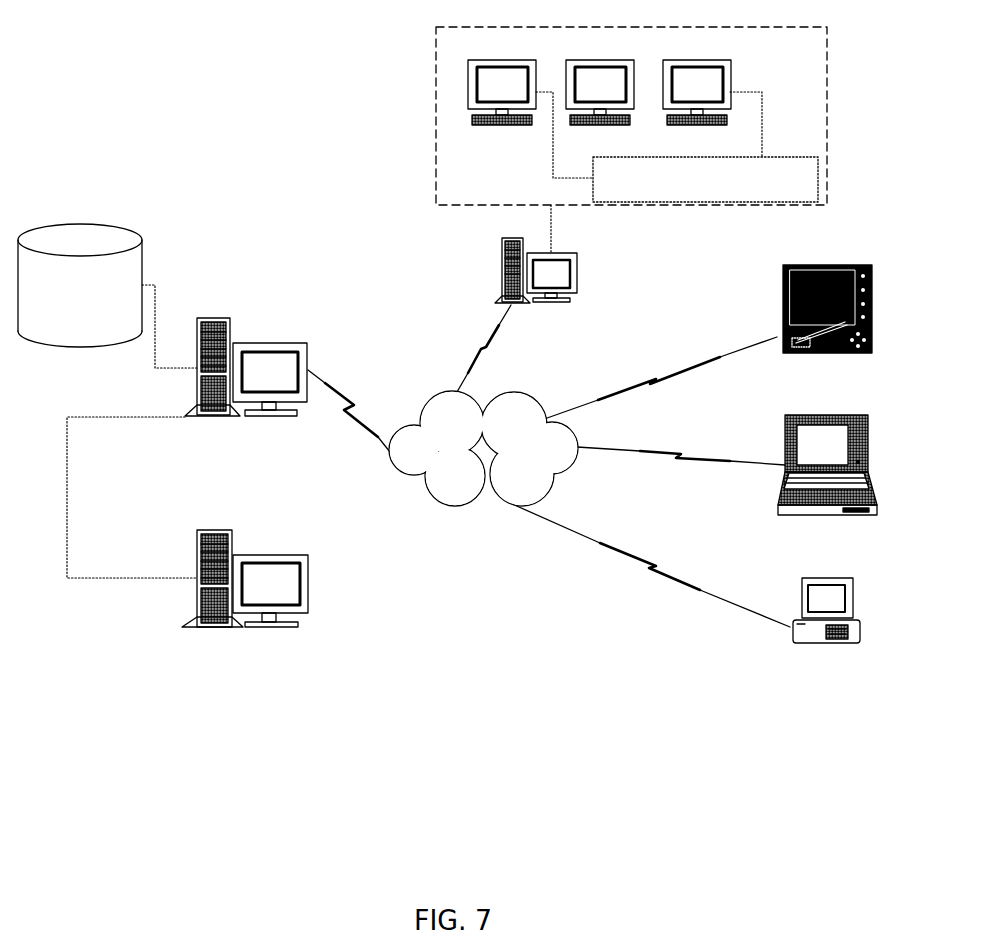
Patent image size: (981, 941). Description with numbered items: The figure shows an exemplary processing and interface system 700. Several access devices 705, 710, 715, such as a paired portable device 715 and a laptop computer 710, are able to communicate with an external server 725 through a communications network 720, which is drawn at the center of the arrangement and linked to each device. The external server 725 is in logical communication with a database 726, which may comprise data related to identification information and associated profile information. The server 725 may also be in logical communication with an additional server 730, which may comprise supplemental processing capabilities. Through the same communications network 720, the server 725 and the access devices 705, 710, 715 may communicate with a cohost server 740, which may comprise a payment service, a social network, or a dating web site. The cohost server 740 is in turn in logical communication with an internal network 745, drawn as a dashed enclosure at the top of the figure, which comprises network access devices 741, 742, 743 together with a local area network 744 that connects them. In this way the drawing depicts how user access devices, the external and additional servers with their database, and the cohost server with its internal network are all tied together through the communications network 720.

The processing and interface system 700 is at (223, 83).
The access device 705 is at (827, 641).
The laptop computer 710 is at (827, 496).
The paired portable device 715 is at (827, 340).
The communications network 720 is at (483, 448).
The external server 725 is at (246, 356).
The database 726 is at (80, 285).
The additional server 730 is at (246, 581).
The cohost server 740 is at (541, 286).
The network access device 741 is at (502, 81).
The network access device 742 is at (600, 81).
The network access device 743 is at (697, 81).
The local area network 744 is at (705, 179).
The internal network 745 is at (631, 116).